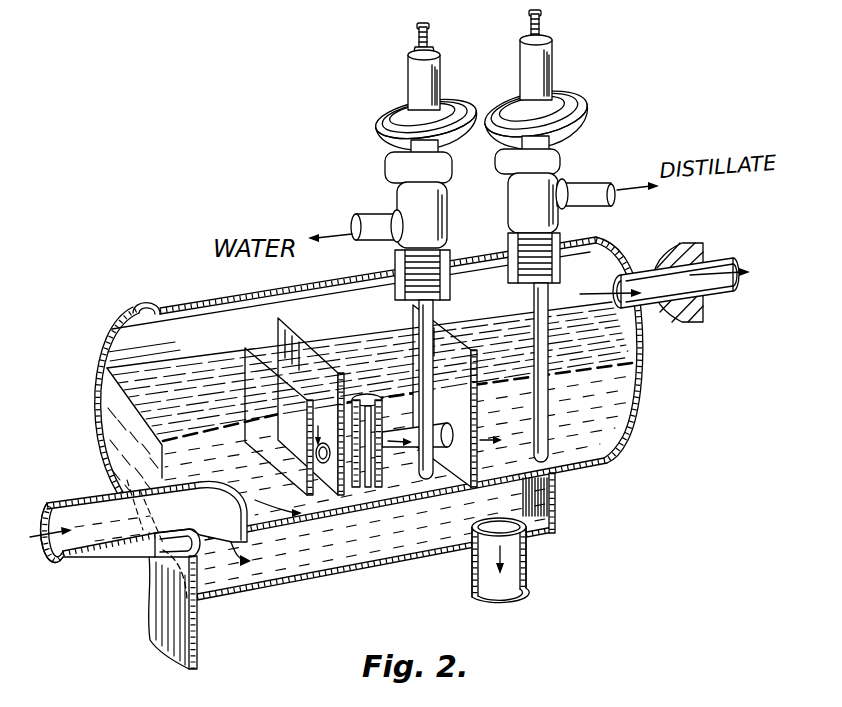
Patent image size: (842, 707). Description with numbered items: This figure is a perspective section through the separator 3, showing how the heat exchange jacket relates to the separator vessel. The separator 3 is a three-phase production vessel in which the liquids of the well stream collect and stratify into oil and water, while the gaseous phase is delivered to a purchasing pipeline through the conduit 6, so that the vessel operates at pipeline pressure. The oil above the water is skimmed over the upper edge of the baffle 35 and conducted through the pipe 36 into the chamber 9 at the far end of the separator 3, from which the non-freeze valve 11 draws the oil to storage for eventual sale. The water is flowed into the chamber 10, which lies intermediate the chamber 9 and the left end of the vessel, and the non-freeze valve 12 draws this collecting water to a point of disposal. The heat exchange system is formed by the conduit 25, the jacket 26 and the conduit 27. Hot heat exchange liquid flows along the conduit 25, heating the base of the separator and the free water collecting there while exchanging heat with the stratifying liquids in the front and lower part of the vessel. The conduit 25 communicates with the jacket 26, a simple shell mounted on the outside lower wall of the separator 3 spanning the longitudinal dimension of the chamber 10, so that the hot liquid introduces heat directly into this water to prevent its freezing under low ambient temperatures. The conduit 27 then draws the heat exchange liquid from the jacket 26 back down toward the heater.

The separator 3 is at (172, 300).
The conduit 6 is at (711, 260).
The chamber 9 is at (565, 332).
The chamber 10 is at (362, 365).
The valve 11 is at (554, 61).
The valve 12 is at (407, 78).
The conduit 25 is at (97, 495).
The jacket 26 is at (342, 573).
The conduit 27 is at (527, 563).
The baffle 35 is at (263, 350).
The pipe 36 is at (427, 440).